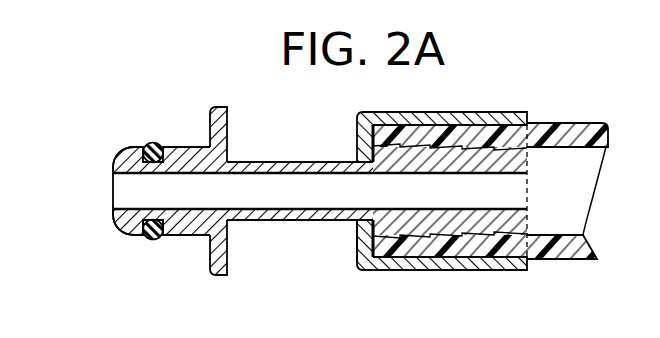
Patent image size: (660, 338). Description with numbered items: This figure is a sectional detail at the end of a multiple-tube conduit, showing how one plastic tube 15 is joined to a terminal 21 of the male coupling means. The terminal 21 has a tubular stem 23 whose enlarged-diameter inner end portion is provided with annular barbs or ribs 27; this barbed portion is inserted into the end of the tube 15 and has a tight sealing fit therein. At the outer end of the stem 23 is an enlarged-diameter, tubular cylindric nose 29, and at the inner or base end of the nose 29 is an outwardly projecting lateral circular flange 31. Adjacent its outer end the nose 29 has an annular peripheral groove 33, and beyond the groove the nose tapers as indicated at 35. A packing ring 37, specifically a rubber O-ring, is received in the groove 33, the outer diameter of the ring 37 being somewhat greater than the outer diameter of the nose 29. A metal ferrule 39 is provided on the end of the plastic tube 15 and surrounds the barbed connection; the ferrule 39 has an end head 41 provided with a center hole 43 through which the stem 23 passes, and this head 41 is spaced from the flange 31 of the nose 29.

The plastic tube 15 is at (590, 123).
The terminal 21 is at (113, 221).
The tubular stem 23 is at (272, 224).
The annular barbs or ribs 27 is at (398, 135).
The cylindric nose 29 is at (185, 152).
The circular flange 31 is at (218, 108).
The annular peripheral groove 33 is at (168, 232).
The taper 35 is at (118, 168).
The packing ring 37 is at (152, 143).
The metal ferrule 39 is at (432, 272).
The end head 41 is at (372, 140).
The center hole 43 is at (357, 223).